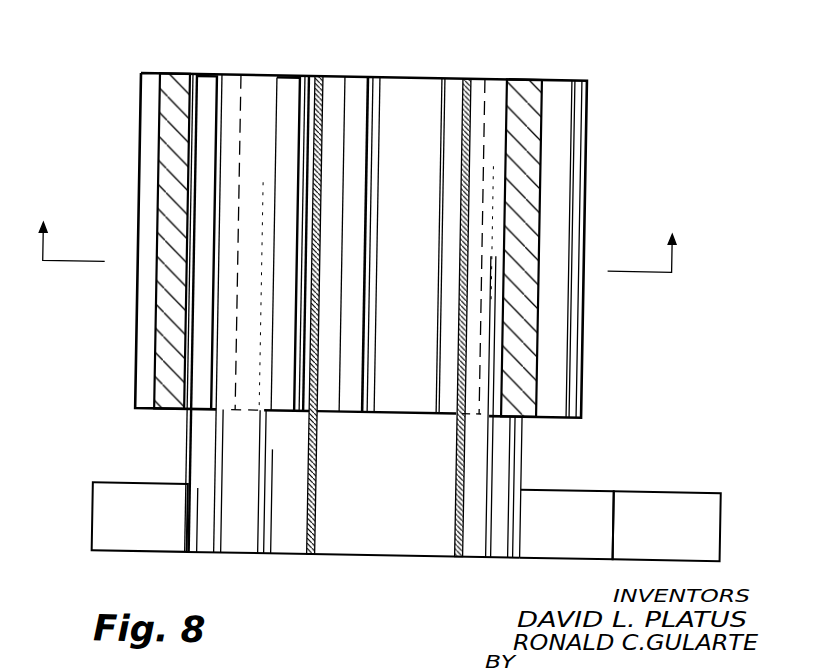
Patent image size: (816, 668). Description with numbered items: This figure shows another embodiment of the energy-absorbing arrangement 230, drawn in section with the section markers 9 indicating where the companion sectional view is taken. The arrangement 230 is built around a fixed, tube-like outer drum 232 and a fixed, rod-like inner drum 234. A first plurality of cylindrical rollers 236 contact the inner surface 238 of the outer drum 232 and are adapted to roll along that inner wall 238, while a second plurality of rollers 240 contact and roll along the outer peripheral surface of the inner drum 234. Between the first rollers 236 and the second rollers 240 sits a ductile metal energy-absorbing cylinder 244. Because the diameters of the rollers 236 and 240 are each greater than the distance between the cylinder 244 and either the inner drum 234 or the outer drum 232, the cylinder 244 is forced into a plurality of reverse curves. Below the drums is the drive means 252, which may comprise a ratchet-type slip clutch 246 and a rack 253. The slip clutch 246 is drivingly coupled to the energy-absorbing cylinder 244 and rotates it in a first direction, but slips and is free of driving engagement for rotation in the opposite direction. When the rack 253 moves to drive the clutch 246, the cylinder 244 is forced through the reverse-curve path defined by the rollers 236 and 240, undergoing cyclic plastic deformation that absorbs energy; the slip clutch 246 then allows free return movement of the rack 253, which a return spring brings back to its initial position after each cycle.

The energy-absorbing arrangement 230 is at (713, 91).
The fixed outer drum 232 is at (563, 71).
The fixed inner drum 234 is at (428, 146).
The first plurality of cylindrical rollers 236 is at (208, 72).
The inner surface of the outer drum 238 is at (195, 72).
The second plurality of rollers 240 is at (455, 70).
The energy-absorbing cylinder 244 is at (488, 89).
The slip clutch 246 is at (547, 483).
The drive means 252 is at (752, 459).
The rack 253 is at (639, 483).
The section line 9- 9 is at (361, 231).